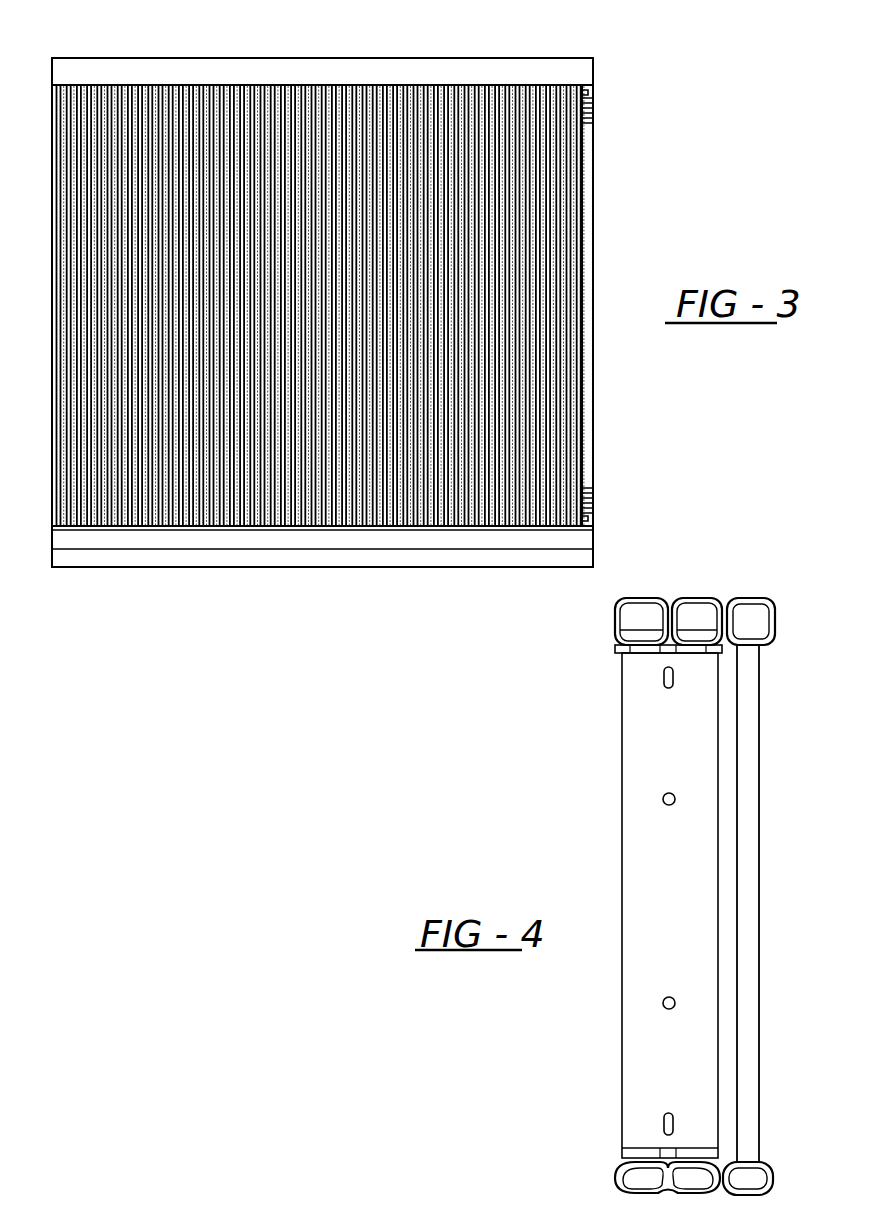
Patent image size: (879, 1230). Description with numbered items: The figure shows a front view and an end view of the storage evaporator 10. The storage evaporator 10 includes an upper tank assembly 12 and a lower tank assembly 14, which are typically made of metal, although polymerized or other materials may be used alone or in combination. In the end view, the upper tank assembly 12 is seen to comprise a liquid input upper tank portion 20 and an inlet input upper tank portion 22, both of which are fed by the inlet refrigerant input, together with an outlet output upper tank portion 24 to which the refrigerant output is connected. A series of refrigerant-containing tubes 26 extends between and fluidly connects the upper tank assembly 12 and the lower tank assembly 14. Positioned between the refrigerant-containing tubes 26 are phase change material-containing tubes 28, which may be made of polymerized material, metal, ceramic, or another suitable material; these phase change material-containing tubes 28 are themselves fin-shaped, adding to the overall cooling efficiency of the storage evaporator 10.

In FIG. 3, the storage evaporator 10 is at (614, 65).
In FIG. 4, the storage evaporator 10 is at (592, 785).
In FIG. 3, the upper tank assembly 12 is at (300, 70).
In FIG. 4, the upper tank assembly 12 is at (715, 615).
In FIG. 3, the lower tank assembly 14 is at (278, 568).
In FIG. 4, the lower tank assembly 14 is at (687, 1190).
In FIG. 4, the liquid input upper tank portion 20 is at (690, 612).
In FIG. 3, the inlet input upper tank portion 22 is at (128, 70).
In FIG. 4, the inlet input upper tank portion 22 is at (762, 610).
In FIG. 4, the outlet output upper tank portion 24 is at (640, 612).
In FIG. 3, the refrigerant-containing tubes 26 is at (537, 248).
In FIG. 4, the refrigerant-containing tubes 26 is at (752, 912).
In FIG. 3, the phase change material-containing tubes 28 is at (487, 192).